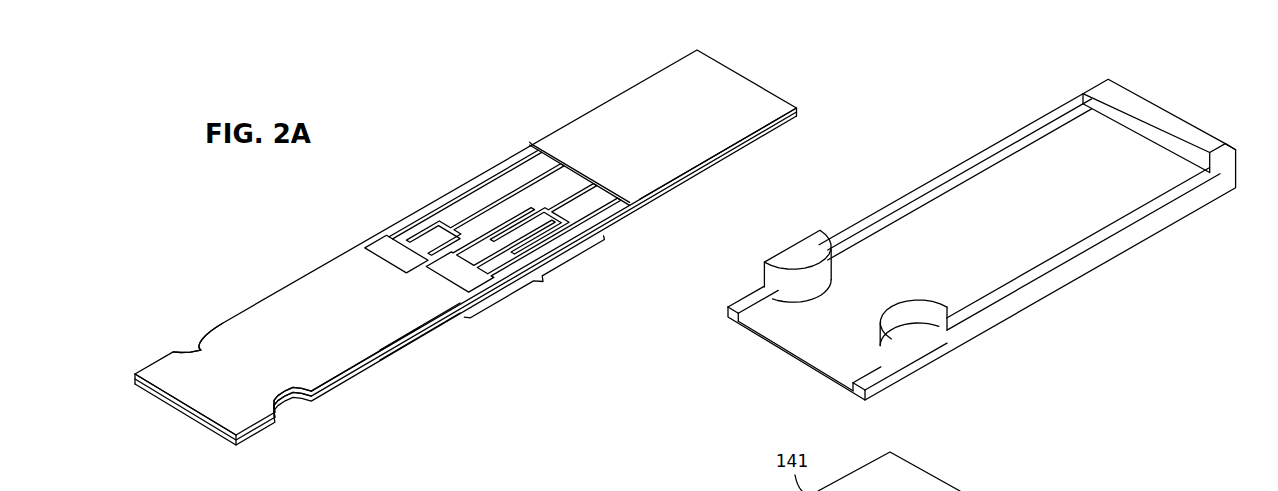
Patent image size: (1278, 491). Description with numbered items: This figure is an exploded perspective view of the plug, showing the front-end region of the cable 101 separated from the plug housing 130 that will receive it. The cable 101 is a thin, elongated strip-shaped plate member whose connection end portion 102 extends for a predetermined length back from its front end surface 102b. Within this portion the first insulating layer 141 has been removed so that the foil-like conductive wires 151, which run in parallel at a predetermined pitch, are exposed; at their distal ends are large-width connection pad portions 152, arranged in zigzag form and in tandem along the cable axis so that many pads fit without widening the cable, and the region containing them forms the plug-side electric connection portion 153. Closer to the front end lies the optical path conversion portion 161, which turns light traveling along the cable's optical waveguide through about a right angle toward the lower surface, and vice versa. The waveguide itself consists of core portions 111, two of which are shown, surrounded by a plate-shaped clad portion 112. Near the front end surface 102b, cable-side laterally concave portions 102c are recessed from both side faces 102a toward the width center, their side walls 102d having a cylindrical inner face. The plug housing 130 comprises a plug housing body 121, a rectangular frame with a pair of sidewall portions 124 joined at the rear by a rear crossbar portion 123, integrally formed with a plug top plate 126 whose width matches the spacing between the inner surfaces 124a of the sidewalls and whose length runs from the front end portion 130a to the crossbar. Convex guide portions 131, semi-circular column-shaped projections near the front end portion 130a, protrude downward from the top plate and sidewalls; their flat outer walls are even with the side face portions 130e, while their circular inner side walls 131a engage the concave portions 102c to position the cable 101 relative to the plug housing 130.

The cable 101 is at (603, 108).
The connection end portion 102 is at (322, 265).
The side faces 102a is at (354, 377).
The front end surface 102b is at (228, 444).
The cable-side laterally concave portions 102c is at (207, 346).
The side walls 102d is at (284, 404).
The core portion 111 is at (172, 407).
The clad portion 112 is at (182, 414).
The plug housing body 121 is at (1198, 212).
The rear crossbar portion 123 is at (1157, 113).
The sidewall portions 124 is at (958, 170).
The inner surface 124a is at (968, 188).
The plug top plate 126 is at (1038, 177).
The plug housing 130 is at (1058, 290).
The front end portion 130a is at (778, 352).
The side face portions 130e is at (883, 386).
The convex guide portions 131 is at (802, 250).
The inner side walls 131a is at (830, 279).
The first insulating layer 141 is at (722, 143).
The conductive wires 151 is at (493, 177).
The connection pad portions 152 is at (407, 263).
The plug-side electric connection portion 153 is at (513, 241).
The optical path conversion portion 161 is at (393, 348).